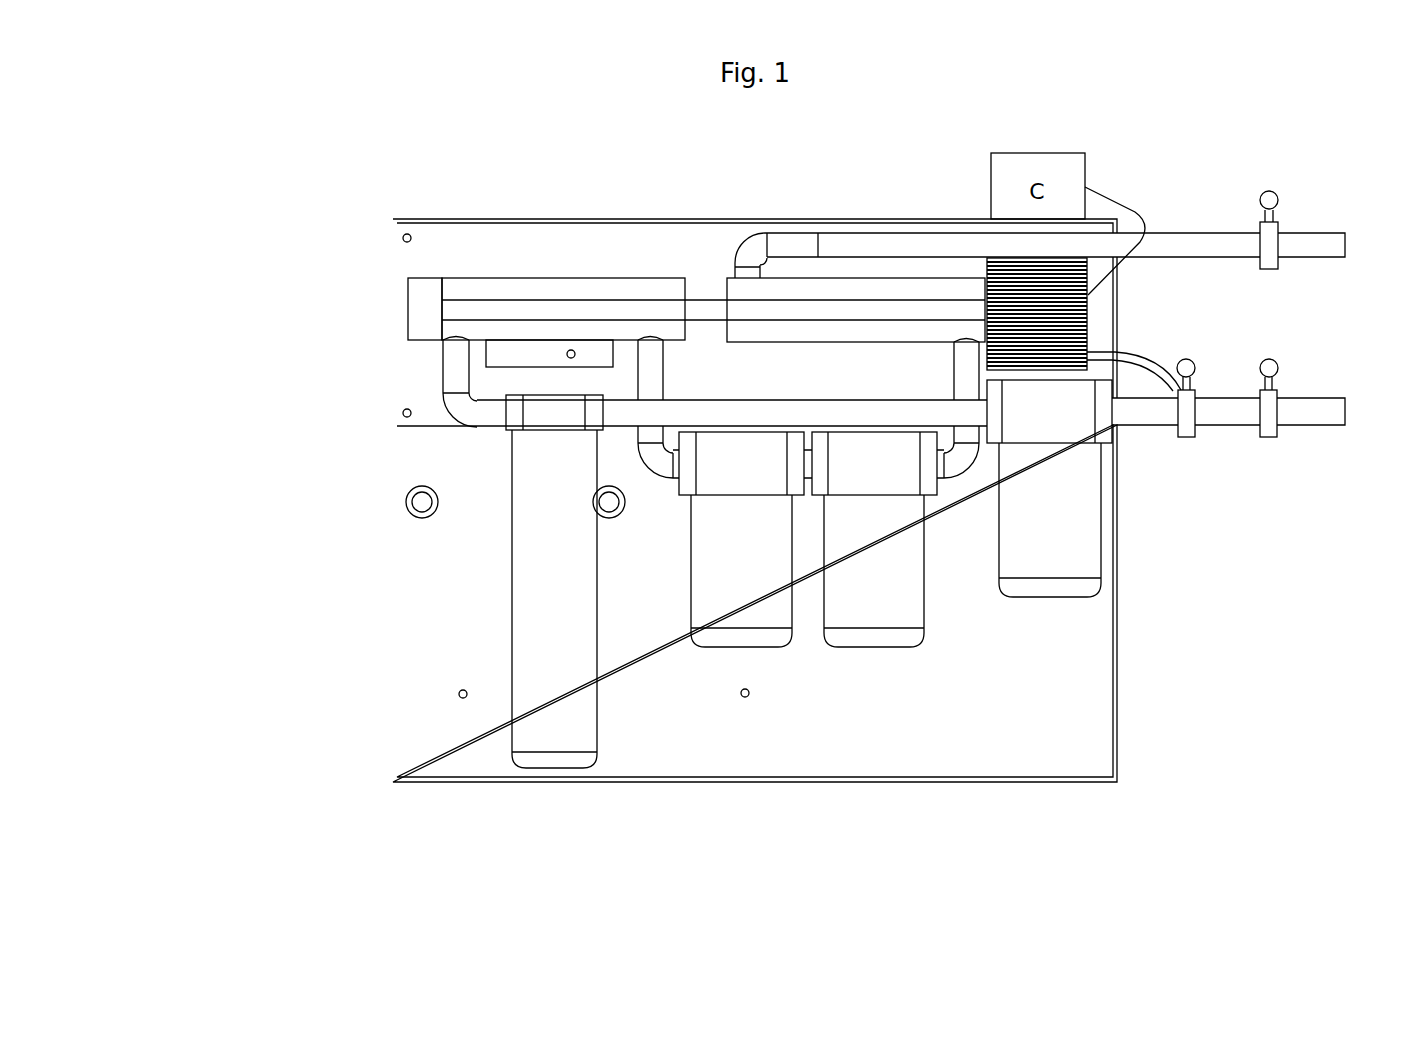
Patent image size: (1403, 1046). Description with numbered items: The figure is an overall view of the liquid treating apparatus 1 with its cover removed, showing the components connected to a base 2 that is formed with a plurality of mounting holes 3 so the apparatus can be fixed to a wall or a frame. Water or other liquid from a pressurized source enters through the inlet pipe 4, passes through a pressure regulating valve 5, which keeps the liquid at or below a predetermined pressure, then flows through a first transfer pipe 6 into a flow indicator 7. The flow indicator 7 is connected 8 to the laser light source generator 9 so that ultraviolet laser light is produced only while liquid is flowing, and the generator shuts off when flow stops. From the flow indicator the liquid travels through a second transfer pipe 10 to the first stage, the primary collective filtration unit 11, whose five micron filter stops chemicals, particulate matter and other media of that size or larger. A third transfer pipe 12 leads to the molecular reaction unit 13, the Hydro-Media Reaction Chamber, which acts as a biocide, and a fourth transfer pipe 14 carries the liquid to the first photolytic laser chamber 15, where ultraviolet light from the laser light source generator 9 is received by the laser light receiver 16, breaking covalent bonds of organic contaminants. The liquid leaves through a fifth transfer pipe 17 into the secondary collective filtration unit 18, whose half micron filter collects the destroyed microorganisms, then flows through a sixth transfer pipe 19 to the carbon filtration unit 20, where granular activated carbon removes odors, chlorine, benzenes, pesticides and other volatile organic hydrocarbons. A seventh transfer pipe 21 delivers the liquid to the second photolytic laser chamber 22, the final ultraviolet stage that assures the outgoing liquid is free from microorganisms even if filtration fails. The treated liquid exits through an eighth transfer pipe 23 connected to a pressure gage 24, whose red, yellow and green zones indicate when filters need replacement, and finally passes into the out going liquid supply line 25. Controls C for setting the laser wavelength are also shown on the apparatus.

The liquid treating apparatus 1 is at (253, 361).
The base 2 is at (778, 748).
The mounting holes 3 is at (457, 690).
The inlet pipe 4 is at (1313, 428).
The pressure regulating valve 5 is at (1280, 388).
The first transfer pipe 6 is at (1227, 428).
The flow indicator 7 is at (1197, 387).
The connection 8 is at (1155, 360).
The laser light source generator 9 is at (1090, 308).
The second transfer pipe 10 is at (1147, 428).
The primary collective filtration unit 11 is at (1083, 548).
The third transfer pipe 12 is at (777, 400).
The molecular reaction unit 13 is at (525, 480).
The fourth transfer pipe 14 is at (452, 376).
The first photolytic laser chamber 15 is at (510, 287).
The laser light receiver 16 is at (413, 311).
The fifth transfer pipe 17 is at (665, 373).
The secondary collective filtration unit 18 is at (713, 580).
The sixth transfer pipe 19 is at (810, 450).
The carbon filtration unit 20 is at (897, 600).
The seventh transfer pipe 21 is at (969, 469).
The second photolytic laser chamber 22 is at (812, 290).
The eighth transfer pipe 23 is at (873, 237).
The pressure gage 24 is at (1258, 220).
The out going liquid supply line 25 is at (1323, 237).